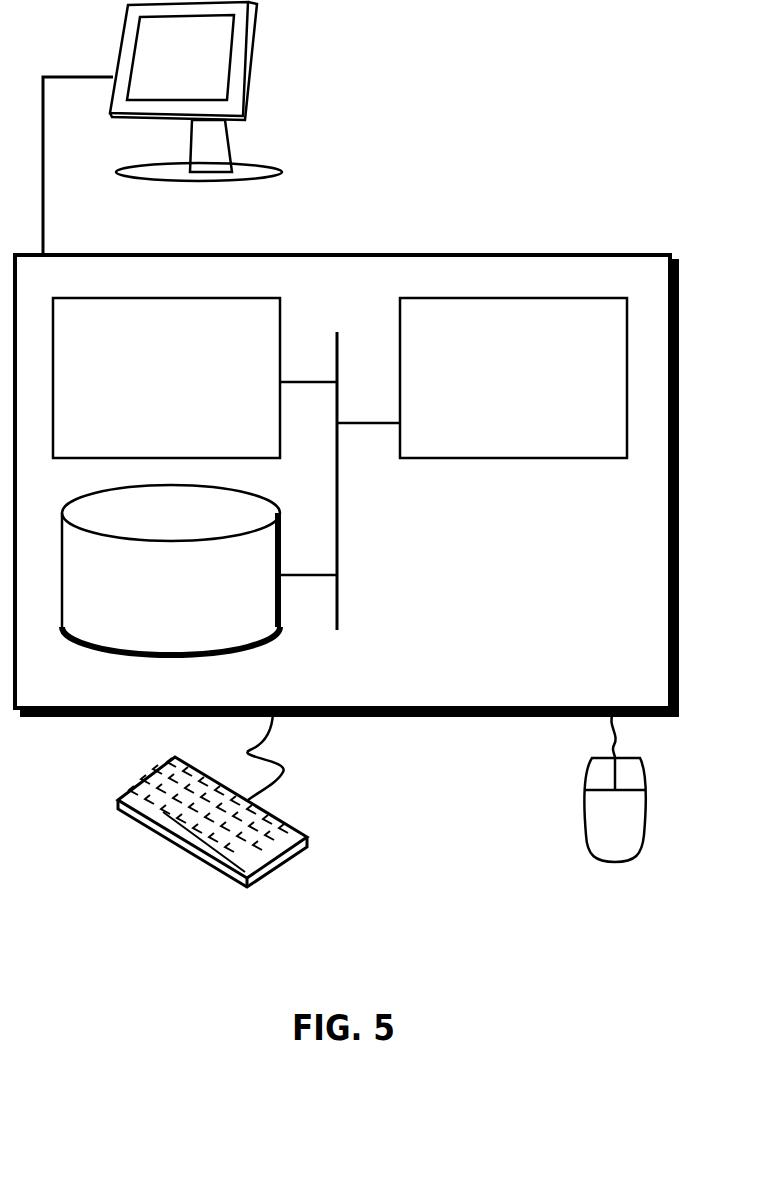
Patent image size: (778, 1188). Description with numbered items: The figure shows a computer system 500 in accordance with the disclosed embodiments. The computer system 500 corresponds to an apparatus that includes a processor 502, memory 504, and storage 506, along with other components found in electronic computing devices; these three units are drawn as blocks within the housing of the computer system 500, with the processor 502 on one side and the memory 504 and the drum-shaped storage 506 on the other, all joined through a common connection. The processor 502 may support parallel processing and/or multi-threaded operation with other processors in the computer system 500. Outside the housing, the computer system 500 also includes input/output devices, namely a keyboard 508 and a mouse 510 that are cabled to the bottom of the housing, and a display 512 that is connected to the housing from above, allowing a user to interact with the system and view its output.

The computer system 500 is at (390, 235).
The processor 502 is at (513, 378).
The memory 504 is at (166, 378).
The storage 506 is at (171, 570).
The keyboard 508 is at (137, 822).
The mouse 510 is at (614, 787).
The display 512 is at (162, 129).